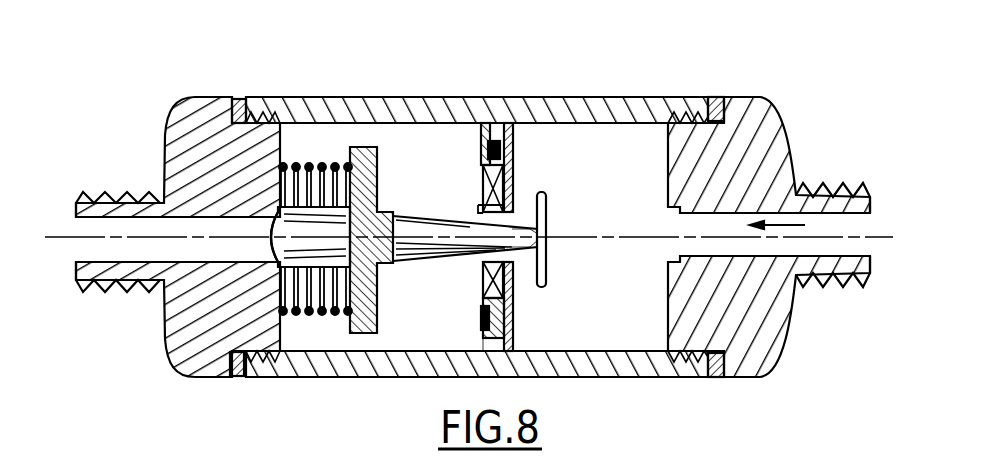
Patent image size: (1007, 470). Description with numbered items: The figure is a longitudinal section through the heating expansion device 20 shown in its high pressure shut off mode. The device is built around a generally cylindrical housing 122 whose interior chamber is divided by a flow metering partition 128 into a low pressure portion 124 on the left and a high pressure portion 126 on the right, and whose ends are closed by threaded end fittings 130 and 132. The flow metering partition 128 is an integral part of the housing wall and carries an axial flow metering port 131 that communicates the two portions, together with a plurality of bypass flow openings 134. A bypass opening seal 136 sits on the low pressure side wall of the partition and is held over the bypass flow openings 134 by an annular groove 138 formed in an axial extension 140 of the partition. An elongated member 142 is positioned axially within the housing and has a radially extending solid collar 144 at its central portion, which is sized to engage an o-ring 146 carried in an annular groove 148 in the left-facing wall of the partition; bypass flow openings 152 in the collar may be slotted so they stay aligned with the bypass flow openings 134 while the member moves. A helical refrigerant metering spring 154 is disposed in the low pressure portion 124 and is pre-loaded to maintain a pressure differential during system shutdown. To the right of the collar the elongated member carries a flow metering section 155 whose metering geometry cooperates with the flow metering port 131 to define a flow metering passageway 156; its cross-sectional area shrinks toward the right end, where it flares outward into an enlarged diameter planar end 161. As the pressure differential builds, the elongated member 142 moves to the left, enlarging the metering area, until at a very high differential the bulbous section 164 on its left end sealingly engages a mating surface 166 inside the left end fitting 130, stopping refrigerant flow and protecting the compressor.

The heating expansion device 20 is at (565, 93).
The housing 122 is at (293, 97).
The low pressure portion 124 is at (458, 338).
The high pressure portion 126 is at (613, 322).
The flow metering partition 128 is at (511, 124).
The threaded end fitting 130 is at (178, 117).
The flow metering port 131 is at (486, 213).
The threaded end fitting 132 is at (780, 126).
The bypass flow openings 134 is at (520, 300).
The bypass opening seal 136 is at (517, 182).
The annular groove 138 is at (520, 197).
The axial extension 140 is at (520, 289).
The elongated member 142 is at (408, 262).
The solid collar 144 is at (377, 153).
The o-ring 146 is at (488, 152).
The annular groove 148 is at (488, 320).
The bypass flow openings 152 is at (377, 180).
The helical refrigerant metering spring 154 is at (350, 162).
The flow metering section 155 is at (480, 250).
The flow metering passageway 156 is at (512, 262).
The enlarged diameter planar end 161 is at (548, 217).
The bulbous section 164 is at (293, 242).
The mating surface 166 is at (268, 240).